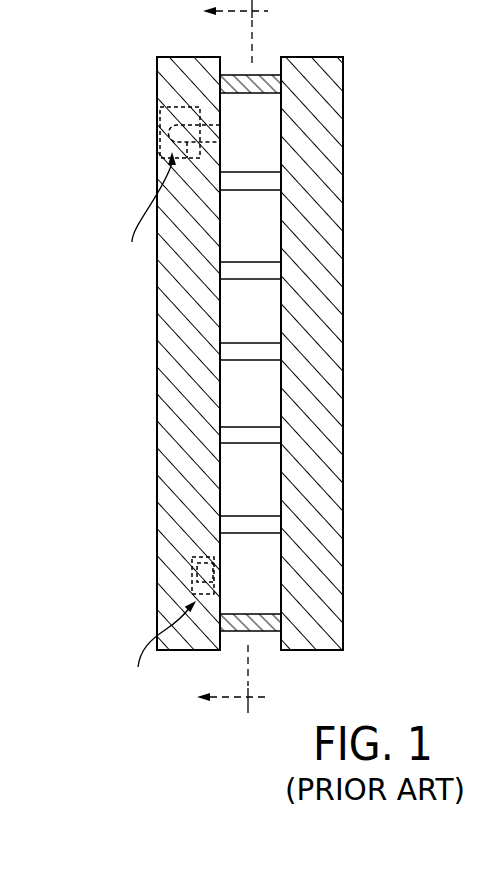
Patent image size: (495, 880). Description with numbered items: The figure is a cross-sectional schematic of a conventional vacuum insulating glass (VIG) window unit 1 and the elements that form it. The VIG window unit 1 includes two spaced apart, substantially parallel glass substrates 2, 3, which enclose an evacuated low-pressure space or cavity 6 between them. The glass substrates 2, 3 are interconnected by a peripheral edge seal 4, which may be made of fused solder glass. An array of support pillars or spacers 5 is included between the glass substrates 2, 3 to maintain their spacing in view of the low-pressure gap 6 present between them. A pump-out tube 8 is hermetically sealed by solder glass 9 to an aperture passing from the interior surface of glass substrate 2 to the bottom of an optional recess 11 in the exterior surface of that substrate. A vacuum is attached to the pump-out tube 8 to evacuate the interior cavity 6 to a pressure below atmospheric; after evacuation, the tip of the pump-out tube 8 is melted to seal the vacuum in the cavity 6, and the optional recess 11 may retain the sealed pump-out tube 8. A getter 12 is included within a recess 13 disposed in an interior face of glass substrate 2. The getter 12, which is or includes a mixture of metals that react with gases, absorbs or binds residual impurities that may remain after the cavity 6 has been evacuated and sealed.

The VIG window unit 1 is at (269, 356).
The glass substrate 2 is at (157, 400).
The glass substrate 3 is at (317, 290).
The peripheral edge seal 4 is at (262, 82).
The support pillars/spacers 5 is at (254, 353).
The low-pressure space/cavity 6 is at (235, 467).
The pump-out tube 8 is at (165, 135).
The solder glass 9 is at (185, 117).
The recess 11 is at (146, 215).
The getter 12 is at (193, 570).
The recess 13 is at (158, 652).